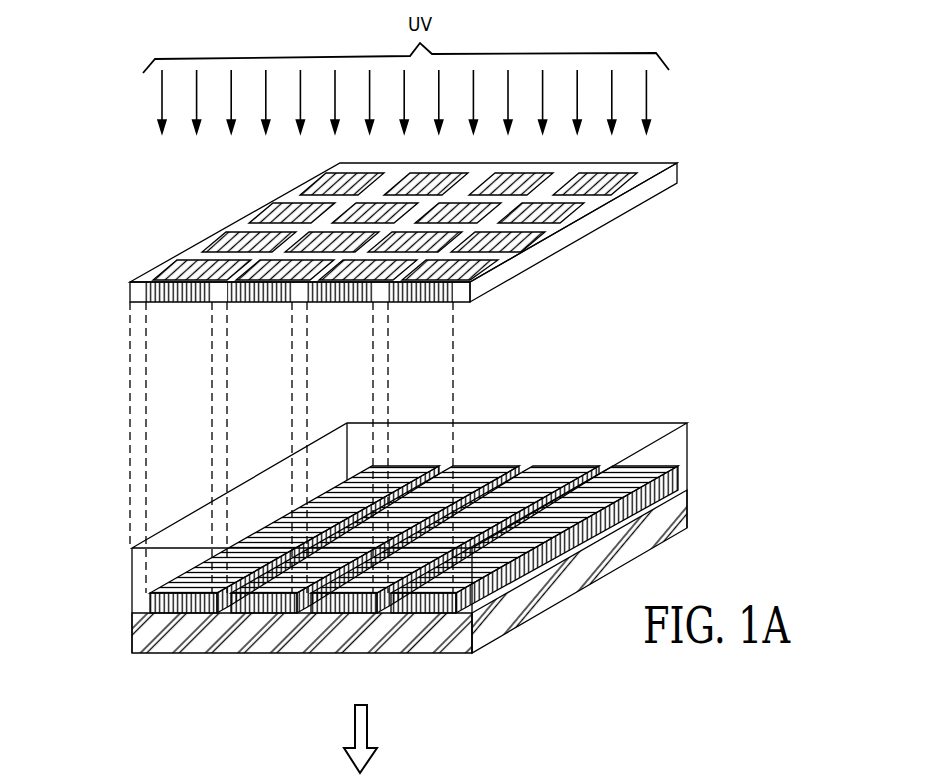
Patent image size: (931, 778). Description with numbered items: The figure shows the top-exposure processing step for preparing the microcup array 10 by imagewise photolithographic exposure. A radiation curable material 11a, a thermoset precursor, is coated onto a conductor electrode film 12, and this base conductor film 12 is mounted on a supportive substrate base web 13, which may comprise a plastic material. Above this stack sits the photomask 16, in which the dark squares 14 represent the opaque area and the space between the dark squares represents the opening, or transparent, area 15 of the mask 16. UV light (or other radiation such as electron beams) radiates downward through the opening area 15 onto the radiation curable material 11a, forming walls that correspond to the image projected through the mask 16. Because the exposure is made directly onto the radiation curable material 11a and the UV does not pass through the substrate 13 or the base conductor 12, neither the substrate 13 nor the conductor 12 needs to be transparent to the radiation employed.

The microcup array 10 is at (414, 512).
The radiation curable material 11a is at (142, 561).
The conductor electrode film 12 is at (148, 595).
The supportive substrate base web 13 is at (386, 574).
The dark squares 14 is at (245, 243).
The opening area 15 is at (212, 261).
The mask 16 is at (607, 212).